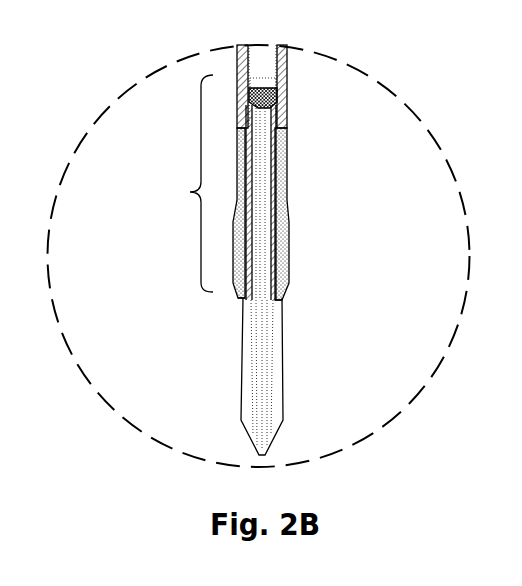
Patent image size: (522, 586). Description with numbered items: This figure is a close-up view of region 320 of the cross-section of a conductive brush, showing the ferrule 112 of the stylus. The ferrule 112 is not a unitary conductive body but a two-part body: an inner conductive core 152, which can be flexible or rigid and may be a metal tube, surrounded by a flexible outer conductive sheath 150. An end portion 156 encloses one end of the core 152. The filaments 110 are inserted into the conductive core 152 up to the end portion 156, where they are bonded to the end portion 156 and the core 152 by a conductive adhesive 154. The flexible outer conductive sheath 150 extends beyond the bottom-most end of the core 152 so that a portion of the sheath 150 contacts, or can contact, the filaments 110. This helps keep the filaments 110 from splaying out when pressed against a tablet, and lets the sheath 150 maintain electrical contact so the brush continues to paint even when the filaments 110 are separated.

The region 320 is at (336, 60).
The ferrule 112 is at (177, 183).
The flexible outer conductive sheath 150 is at (288, 237).
The conductive core 152 is at (270, 162).
The conductive adhesive 154 is at (268, 101).
The end portion 156 is at (263, 80).
The filaments 110 is at (258, 360).